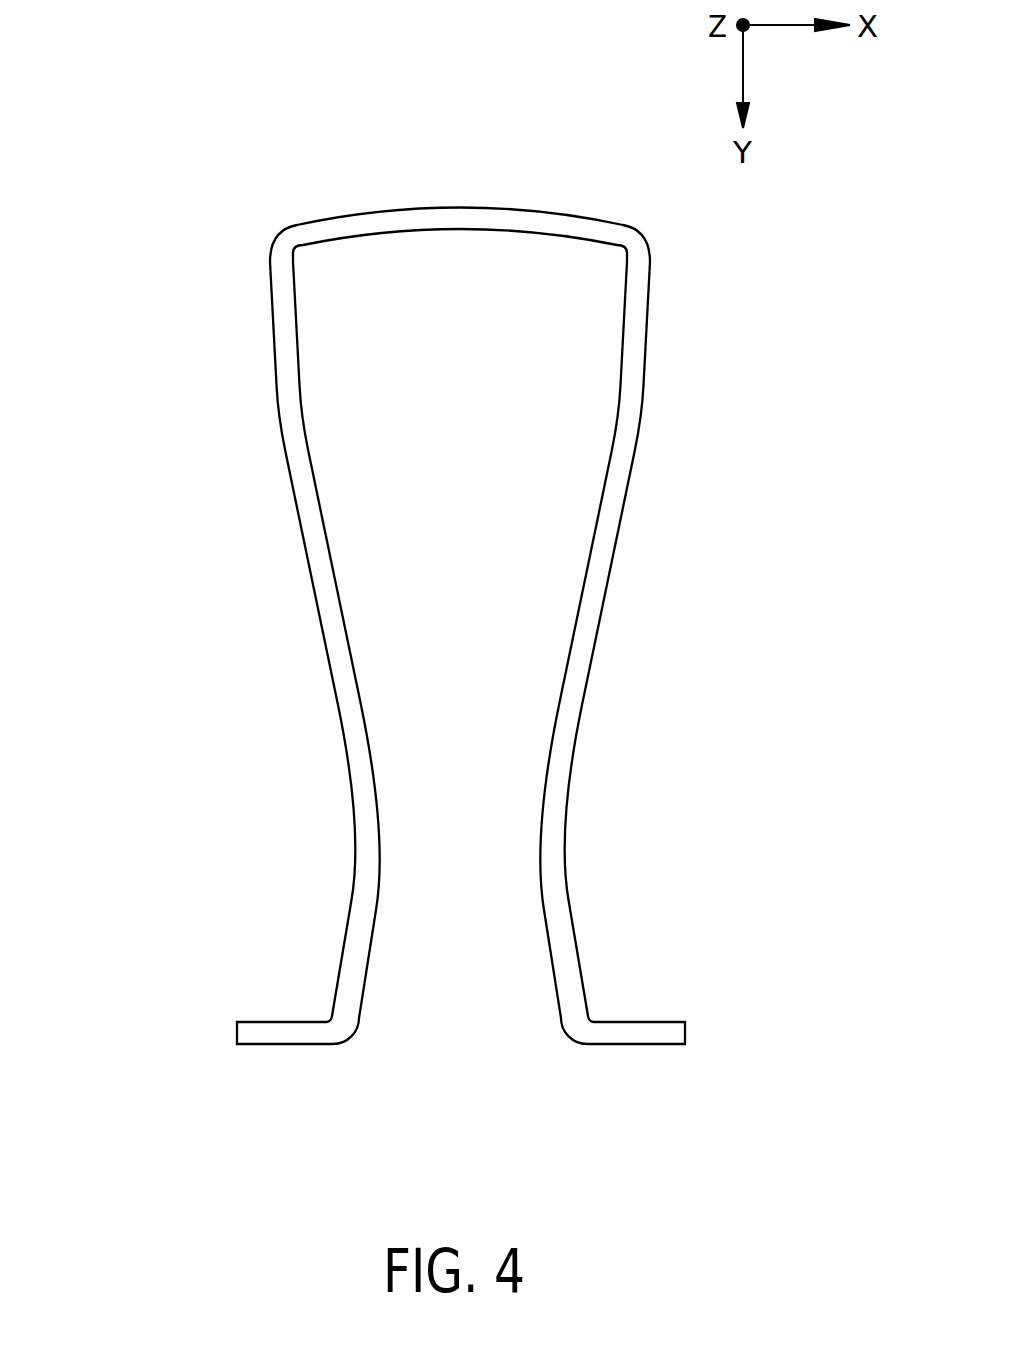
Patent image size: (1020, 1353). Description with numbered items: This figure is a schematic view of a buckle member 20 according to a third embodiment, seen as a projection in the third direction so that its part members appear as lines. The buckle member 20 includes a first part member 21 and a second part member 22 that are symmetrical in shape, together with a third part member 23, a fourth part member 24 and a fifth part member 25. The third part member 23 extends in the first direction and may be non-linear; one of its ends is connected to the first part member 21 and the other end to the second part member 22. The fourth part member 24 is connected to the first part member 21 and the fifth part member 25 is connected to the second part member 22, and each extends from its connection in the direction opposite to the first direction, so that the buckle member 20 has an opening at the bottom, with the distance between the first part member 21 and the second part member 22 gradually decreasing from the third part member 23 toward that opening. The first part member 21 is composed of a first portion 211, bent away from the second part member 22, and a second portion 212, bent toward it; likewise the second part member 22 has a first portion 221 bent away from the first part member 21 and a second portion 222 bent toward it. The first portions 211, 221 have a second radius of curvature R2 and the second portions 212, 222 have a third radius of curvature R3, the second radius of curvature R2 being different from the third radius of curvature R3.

The buckle member 20 is at (170, 219).
The first part member 21 is at (118, 352).
The second part member 22 is at (802, 352).
The third part member 23 is at (458, 218).
The fourth part member 24 is at (293, 1032).
The fifth part member 25 is at (628, 1032).
The first portion 211 is at (292, 377).
The second portion 212 is at (357, 725).
The first portion 221 is at (632, 377).
The second portion 222 is at (563, 725).
The second radius of curvature R2 is at (262, 450).
The third radius of curvature R3 is at (330, 777).